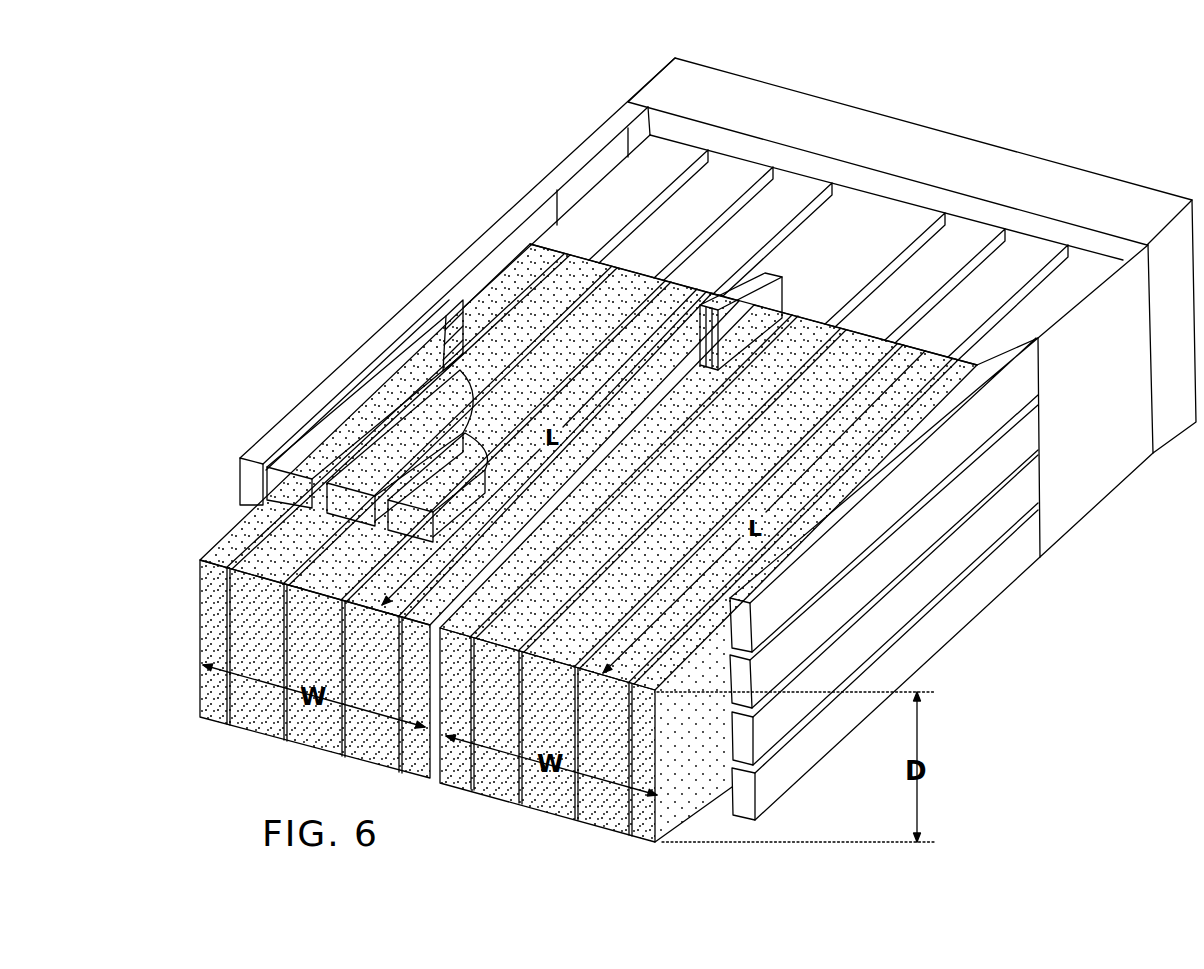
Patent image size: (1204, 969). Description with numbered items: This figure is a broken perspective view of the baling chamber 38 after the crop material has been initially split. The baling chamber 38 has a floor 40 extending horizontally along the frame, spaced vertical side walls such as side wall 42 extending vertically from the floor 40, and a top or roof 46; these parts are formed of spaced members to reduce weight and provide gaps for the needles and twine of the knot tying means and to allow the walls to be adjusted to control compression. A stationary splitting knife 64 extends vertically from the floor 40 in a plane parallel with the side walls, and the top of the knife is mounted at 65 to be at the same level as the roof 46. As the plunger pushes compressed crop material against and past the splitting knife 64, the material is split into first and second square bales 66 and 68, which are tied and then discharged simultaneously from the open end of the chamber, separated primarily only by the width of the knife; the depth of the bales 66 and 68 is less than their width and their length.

The baling chamber 38 is at (497, 225).
The floor 40 is at (727, 785).
The vertical side wall 42 is at (413, 297).
The top or roof 46 is at (406, 453).
The splitting knife 64 is at (703, 302).
The splitting knife top mounting 65 is at (752, 302).
The first square bale 66 is at (199, 639).
The second square bale 68 is at (597, 835).